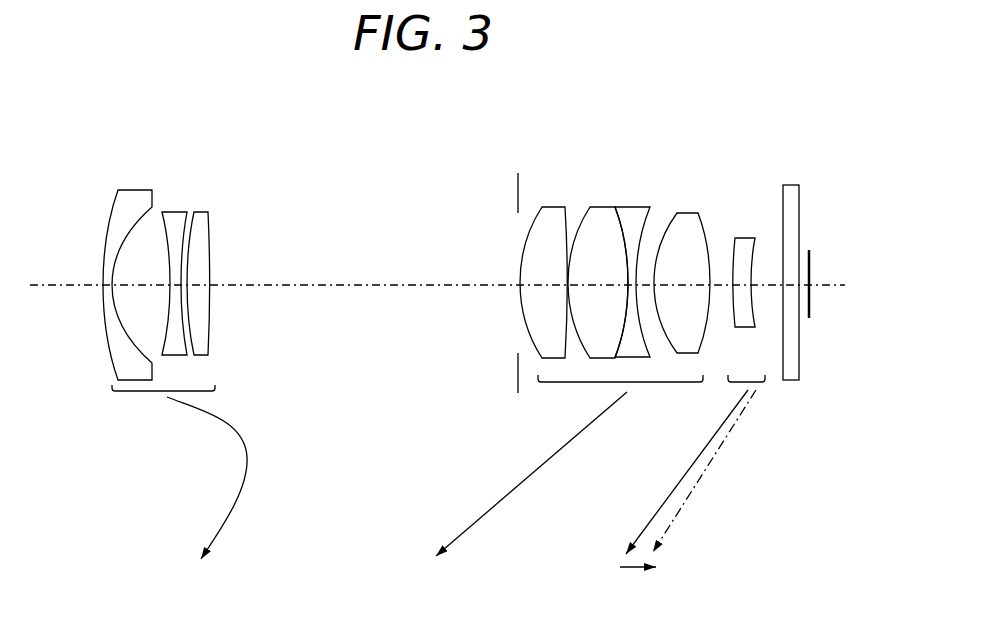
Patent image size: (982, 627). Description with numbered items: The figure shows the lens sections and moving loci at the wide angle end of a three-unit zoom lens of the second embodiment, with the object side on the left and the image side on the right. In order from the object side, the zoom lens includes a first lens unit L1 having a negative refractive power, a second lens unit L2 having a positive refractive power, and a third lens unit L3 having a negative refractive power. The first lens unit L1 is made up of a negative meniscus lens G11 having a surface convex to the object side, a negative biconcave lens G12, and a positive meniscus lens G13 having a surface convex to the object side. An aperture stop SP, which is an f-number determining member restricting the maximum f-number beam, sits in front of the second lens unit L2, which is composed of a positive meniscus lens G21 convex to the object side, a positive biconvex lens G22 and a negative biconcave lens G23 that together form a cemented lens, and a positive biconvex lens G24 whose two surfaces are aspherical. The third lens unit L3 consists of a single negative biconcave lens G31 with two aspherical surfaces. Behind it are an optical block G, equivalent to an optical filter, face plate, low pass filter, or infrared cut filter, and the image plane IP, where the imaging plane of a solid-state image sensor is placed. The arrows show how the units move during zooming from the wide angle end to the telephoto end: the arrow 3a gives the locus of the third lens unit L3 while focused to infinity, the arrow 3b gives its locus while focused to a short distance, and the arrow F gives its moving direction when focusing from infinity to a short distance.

The first lens unit L1 is at (215, 112).
The second lens unit L2 is at (672, 107).
The third lens unit L3 is at (732, 108).
The negative meniscus lens G11 is at (131, 190).
The negative biconcave lens G12 is at (172, 212).
The positive meniscus lens G13 is at (196, 212).
The positive meniscus lens G21 is at (553, 207).
The positive biconvex lens G22 is at (603, 207).
The negative biconcave lens G23 is at (633, 209).
The positive biconvex lens G24 is at (682, 213).
The negative biconcave lens G31 is at (747, 238).
The aperture stop SP is at (516, 173).
The optical block G is at (800, 108).
The image plane IP is at (811, 251).
The arrow 3a is at (668, 497).
The arrow 3b is at (695, 487).
The arrow F is at (648, 567).